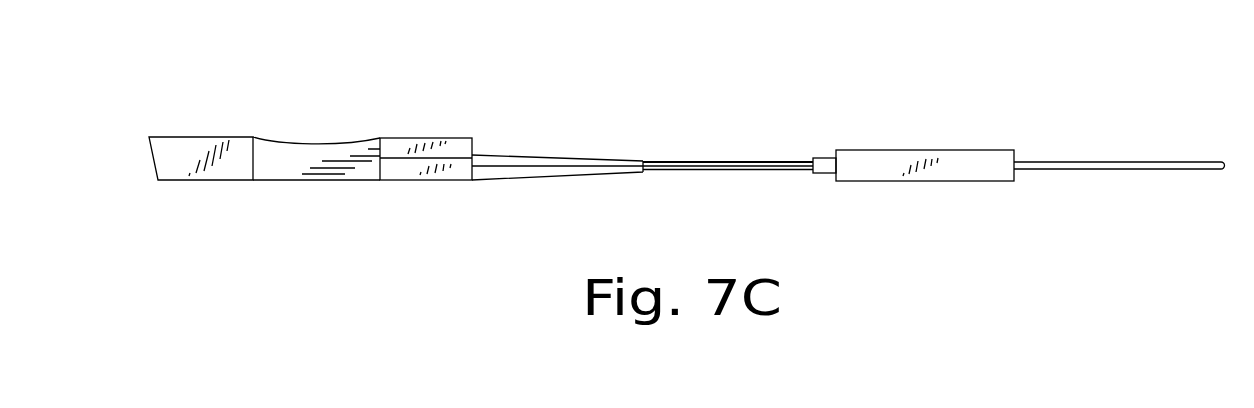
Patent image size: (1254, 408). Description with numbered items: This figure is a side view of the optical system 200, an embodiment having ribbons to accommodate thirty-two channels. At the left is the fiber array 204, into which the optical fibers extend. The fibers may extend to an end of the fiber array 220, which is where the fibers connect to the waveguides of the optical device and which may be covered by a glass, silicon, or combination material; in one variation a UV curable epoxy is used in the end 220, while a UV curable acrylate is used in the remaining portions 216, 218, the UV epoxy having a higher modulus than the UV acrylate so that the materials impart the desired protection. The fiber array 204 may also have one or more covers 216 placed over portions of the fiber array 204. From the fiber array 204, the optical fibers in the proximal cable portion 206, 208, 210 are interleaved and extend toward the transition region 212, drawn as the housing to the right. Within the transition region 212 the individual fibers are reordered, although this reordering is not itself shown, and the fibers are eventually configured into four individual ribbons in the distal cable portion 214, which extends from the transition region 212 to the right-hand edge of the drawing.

The optical system 200 is at (312, 292).
The fiber array 204 is at (200, 133).
The proximal cable portion 206 is at (557, 172).
The proximal cable portion 208 is at (698, 158).
The proximal cable portion 210 is at (819, 158).
The transition region 212 is at (969, 167).
The distal cable portion 214 is at (1140, 160).
The cover 216 is at (448, 145).
The remaining portion of fiber array 218 is at (298, 170).
The end of fiber array 220 is at (228, 181).